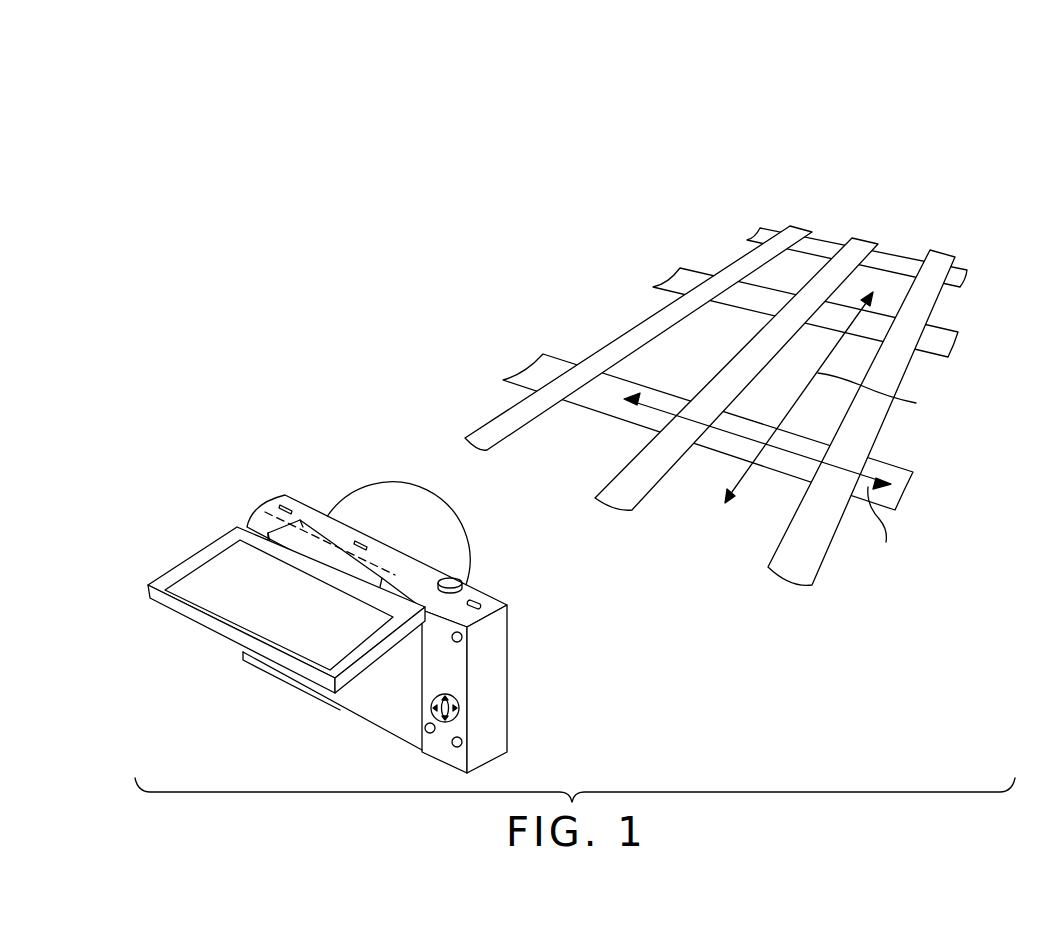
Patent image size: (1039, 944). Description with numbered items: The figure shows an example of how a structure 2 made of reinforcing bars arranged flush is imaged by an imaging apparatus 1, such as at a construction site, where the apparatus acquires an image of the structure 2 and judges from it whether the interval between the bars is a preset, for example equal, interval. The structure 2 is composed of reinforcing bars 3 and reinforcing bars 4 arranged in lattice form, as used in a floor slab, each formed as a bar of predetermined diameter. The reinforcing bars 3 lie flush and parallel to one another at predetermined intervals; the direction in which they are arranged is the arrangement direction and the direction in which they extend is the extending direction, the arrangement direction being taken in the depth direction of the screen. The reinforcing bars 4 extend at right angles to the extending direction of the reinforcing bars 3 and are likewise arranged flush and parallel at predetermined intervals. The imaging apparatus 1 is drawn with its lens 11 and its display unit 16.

The imaging apparatus 1 is at (402, 462).
The structure 2 is at (889, 135).
The reinforcing bars 3 is at (970, 280).
The reinforcing bars 4 is at (803, 225).
The lens 11 is at (362, 492).
The display unit 16 is at (222, 603).